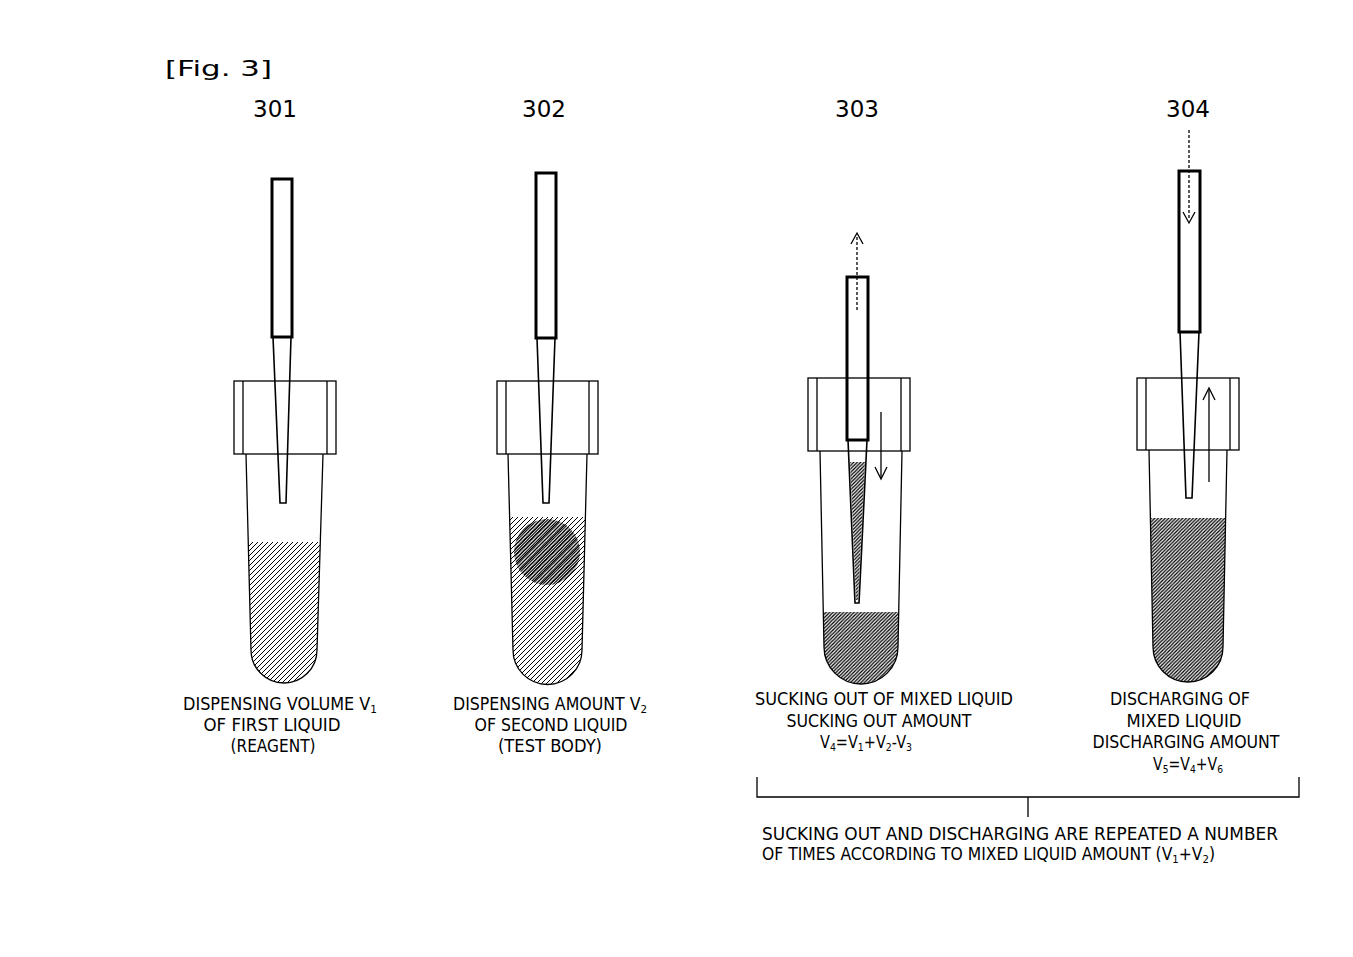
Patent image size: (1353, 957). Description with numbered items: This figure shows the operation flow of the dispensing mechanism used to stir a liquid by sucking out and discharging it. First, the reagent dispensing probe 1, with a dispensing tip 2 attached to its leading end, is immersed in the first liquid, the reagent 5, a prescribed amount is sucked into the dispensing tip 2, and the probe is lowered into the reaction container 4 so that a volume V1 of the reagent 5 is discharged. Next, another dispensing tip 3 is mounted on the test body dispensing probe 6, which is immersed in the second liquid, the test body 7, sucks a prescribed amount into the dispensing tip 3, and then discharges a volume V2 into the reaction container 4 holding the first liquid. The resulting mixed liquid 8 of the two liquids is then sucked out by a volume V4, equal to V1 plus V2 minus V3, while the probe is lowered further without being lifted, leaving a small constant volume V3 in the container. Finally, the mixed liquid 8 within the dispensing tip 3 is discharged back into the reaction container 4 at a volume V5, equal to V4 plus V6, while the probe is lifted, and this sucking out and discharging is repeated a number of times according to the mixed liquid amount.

The reagent dispensing probe 1 is at (276, 297).
The dispensing tip 2 is at (276, 372).
The dispensing tip 3 is at (553, 355).
The reaction container 4 is at (258, 528).
The reagent 5 is at (285, 640).
The test body dispensing probe 6 is at (537, 275).
The test body 7 is at (523, 545).
The mixed liquid 8 is at (850, 655).